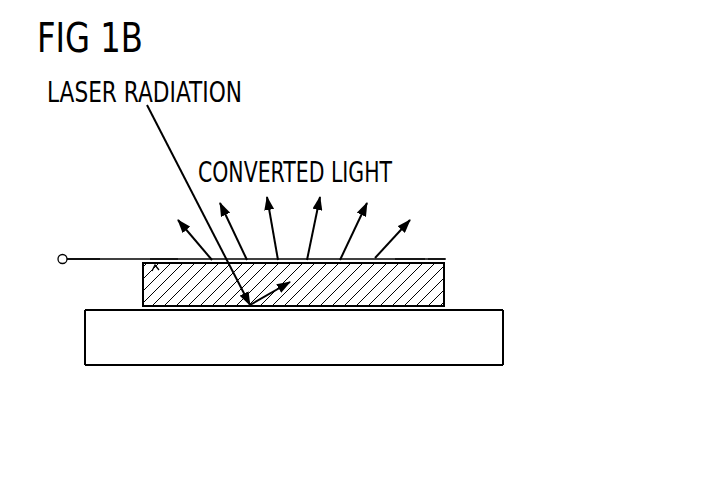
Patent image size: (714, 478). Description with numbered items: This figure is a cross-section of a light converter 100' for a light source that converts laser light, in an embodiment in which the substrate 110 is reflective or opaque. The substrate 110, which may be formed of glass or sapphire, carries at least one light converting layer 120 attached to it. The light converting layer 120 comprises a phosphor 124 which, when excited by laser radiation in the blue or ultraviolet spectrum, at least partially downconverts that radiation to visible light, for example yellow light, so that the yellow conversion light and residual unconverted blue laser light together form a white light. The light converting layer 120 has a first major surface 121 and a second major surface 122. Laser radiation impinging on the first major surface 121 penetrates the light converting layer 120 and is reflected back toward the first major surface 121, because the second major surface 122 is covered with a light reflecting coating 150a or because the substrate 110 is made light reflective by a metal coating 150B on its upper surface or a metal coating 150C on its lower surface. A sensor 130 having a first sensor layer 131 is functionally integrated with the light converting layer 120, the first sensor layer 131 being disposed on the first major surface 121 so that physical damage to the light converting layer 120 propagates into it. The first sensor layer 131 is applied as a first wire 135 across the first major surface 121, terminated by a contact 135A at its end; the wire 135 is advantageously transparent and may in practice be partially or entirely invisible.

The light converter 100' is at (310, 252).
The substrate 110 is at (296, 357).
The light converting layer 120 is at (130, 265).
The first major surface 121 is at (143, 280).
The second major surface 122 is at (530, 282).
The light reflecting coating 150a is at (437, 284).
The phosphor 124 is at (443, 262).
The sensor 130 is at (458, 257).
The first sensor layer 131 is at (164, 250).
The first wire 135 is at (410, 260).
The contact 135A is at (83, 259).
The metal coating 150B is at (495, 313).
The metal coating 150C is at (393, 362).